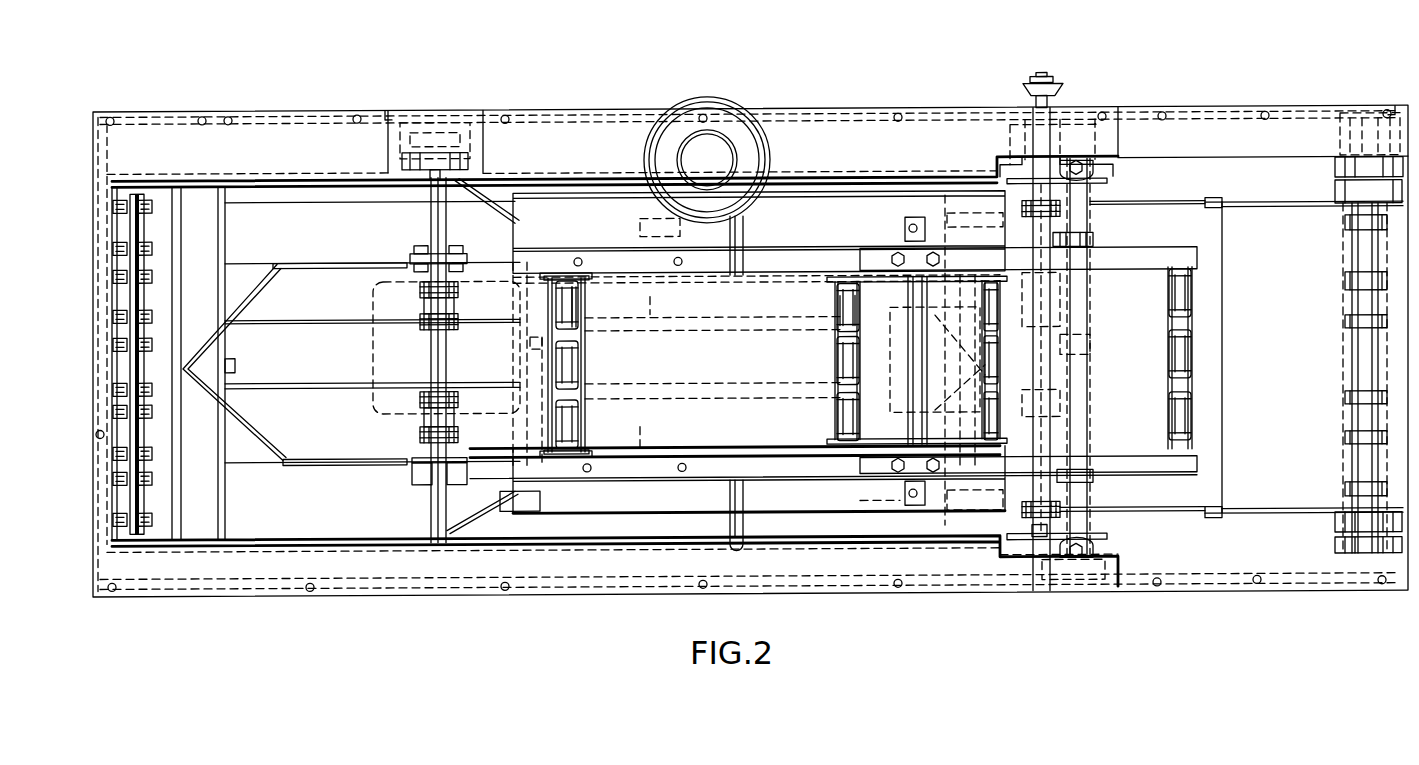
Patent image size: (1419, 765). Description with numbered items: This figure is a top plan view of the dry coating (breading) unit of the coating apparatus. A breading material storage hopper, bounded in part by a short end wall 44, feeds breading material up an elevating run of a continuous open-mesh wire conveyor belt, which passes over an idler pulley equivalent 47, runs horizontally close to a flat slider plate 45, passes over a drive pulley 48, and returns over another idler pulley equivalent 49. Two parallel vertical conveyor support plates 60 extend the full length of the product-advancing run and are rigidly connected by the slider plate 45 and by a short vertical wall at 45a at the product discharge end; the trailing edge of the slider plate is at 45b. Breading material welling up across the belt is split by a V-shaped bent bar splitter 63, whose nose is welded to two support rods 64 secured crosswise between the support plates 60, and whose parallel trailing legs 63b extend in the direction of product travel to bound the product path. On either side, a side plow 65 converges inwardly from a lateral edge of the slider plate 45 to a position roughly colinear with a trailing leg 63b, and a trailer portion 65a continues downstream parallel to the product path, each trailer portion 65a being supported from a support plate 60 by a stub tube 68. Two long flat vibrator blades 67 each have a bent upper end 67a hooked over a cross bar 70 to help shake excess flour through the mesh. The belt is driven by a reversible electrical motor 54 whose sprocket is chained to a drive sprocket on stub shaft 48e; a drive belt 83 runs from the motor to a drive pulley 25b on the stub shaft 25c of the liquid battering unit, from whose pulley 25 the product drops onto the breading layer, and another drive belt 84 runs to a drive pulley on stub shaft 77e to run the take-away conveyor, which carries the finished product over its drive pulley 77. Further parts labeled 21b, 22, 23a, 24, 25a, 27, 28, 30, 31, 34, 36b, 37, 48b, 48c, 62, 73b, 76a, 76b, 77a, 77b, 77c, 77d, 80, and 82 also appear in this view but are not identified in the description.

The transverse support bar 21b is at (1148, 258).
The roller assembly 22 is at (1192, 306).
The carriage plate 23a is at (906, 291).
The roller 24 is at (577, 305).
The pulley 25 is at (430, 352).
The shaft bearing 25a is at (428, 182).
The drive pulley 25b is at (471, 113).
The stub shaft 25c is at (433, 114).
The roller column 27 is at (582, 360).
The roller mounting plate 28 is at (545, 283).
The carriage roller 30 is at (836, 299).
The carriage guide 31 is at (1008, 440).
The mounting plate 34 is at (928, 259).
The bracket 36b is at (650, 230).
The cable drum 37 is at (738, 96).
The short end wall 44 is at (152, 428).
The slider plate 45 is at (309, 368).
The short vertical wall 45a is at (226, 371).
The trailing edge of slider plate 45b is at (866, 509).
The idler pulley equivalent 47 is at (148, 458).
The drive pulley 48 is at (1084, 310).
The adjusting knob 48b is at (1052, 85).
The shaft bracket 48c is at (1010, 163).
The stub shaft 48e is at (1050, 104).
The idler pulley equivalent 49 is at (1090, 336).
The electrical motor 54 is at (373, 290).
The conveyor support plates 60 is at (1108, 188).
The bearing block 62 is at (1095, 177).
The splitter 63 is at (208, 340).
The trailing legs 63b is at (296, 276).
The support rods 64 is at (137, 502).
The side plows 65 is at (500, 212).
The trailer portion 65a is at (656, 332).
The vibrator blades 67 is at (839, 245).
The bent portion 67a is at (505, 497).
The stub tube 68 is at (745, 229).
The cross bar 70 is at (513, 350).
The roller bearing 73b is at (846, 346).
The side rail 76a is at (1265, 209).
The side frame 76b is at (1292, 364).
The drive pulley 77 is at (1350, 288).
The shaft collar 77a is at (1365, 263).
The lower bearing 77b is at (1366, 521).
The lower bearing cap 77c is at (1345, 551).
The upper bearing 77d is at (1362, 186).
The stub shaft 77e is at (1342, 143).
The end frame 80 is at (1223, 449).
The coupling 82 is at (1090, 356).
The drive belt 83 is at (405, 152).
The drive belt 84 is at (377, 121).